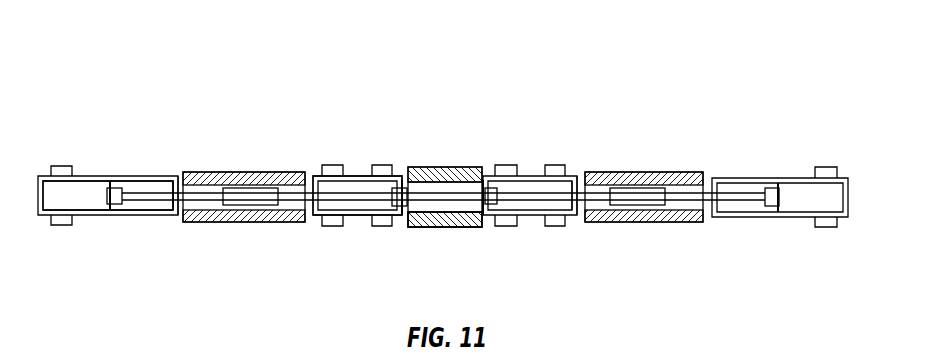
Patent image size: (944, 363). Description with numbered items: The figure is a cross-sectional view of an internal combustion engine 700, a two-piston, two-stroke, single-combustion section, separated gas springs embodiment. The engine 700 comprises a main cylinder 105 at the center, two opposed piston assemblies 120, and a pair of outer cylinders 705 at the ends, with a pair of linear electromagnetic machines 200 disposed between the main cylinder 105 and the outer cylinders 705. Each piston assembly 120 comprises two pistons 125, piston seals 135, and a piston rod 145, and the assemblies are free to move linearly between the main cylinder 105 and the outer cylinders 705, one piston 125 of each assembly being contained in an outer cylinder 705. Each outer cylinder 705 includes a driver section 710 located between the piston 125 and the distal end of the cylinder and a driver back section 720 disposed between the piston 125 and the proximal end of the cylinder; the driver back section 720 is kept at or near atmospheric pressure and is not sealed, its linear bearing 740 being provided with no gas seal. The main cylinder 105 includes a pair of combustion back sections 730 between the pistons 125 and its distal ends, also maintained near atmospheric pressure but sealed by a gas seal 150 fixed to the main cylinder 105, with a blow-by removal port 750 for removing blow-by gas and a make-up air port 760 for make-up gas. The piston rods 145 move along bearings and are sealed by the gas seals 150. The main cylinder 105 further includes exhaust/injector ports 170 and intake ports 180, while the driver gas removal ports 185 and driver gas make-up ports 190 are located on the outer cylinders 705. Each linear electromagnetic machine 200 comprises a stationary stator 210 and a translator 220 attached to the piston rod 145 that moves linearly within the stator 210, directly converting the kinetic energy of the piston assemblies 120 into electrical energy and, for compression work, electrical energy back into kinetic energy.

The internal combustion engine 700 is at (127, 44).
The piston assembly 120 is at (405, 110).
The outer cylinder 705 is at (93, 176).
The driver section 710 is at (66, 225).
The driver back section 720 is at (158, 208).
The linear bearing 740 is at (178, 213).
The piston 125 is at (118, 212).
The piston seal 135 is at (110, 180).
The piston rod 145 is at (208, 172).
The gas seal 150 is at (305, 222).
The combustion back section 730 is at (357, 211).
The exhaust/injector port 170 is at (441, 168).
The main cylinder 105 is at (453, 226).
The intake port 180 is at (505, 165).
The blow-by removal port 750 is at (553, 166).
The make-up air port 760 is at (570, 227).
The linear electromagnetic machine 200 is at (705, 98).
The stator 210 is at (672, 172).
The translator 220 is at (632, 188).
The driver gas removal port 185 is at (825, 167).
The driver gas make-up port 190 is at (825, 227).